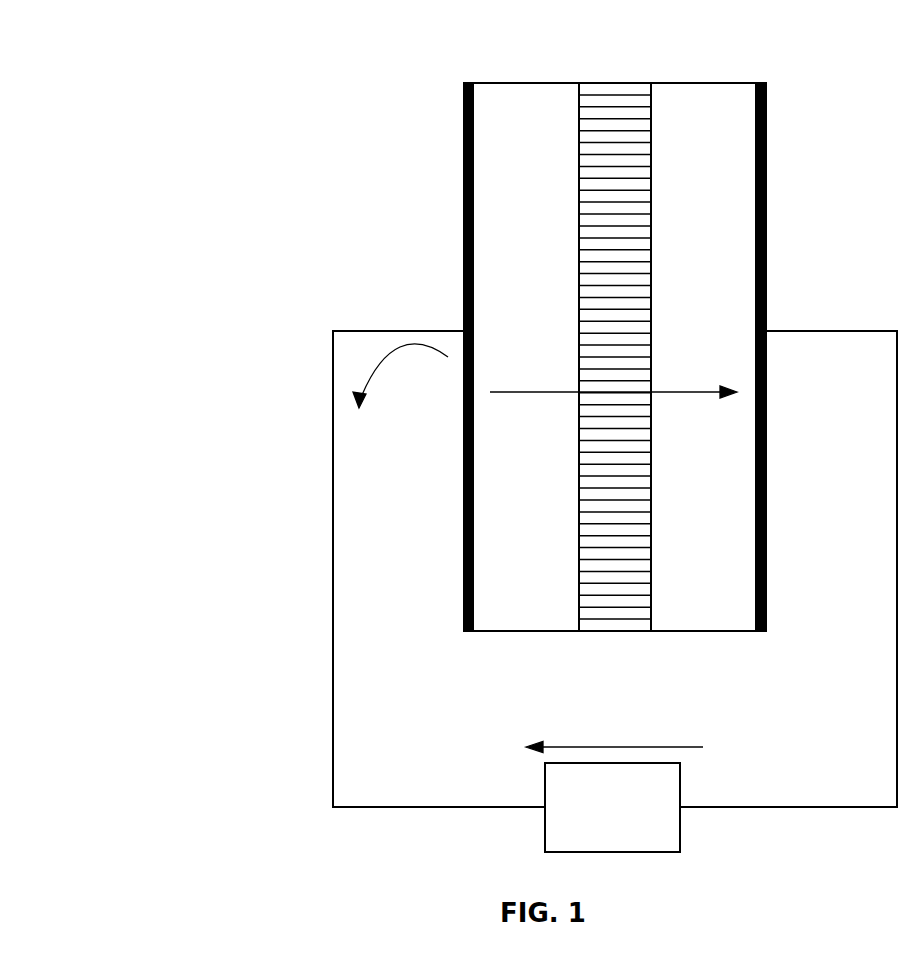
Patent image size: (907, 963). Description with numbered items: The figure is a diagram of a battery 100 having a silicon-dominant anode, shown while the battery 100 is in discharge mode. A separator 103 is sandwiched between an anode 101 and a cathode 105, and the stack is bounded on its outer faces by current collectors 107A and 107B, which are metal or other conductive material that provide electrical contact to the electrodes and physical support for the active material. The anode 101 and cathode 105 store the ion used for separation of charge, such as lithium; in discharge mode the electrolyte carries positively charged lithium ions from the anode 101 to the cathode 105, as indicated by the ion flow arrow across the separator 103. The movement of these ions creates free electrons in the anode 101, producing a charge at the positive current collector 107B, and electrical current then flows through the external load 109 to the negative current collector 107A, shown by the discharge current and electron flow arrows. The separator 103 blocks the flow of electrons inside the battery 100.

The battery 100 is at (150, 176).
The anode 101 is at (507, 293).
The separator 103 is at (617, 82).
The cathode 105 is at (685, 297).
The negative current collector 107A is at (462, 100).
The positive current collector 107B is at (767, 108).
The load 109 is at (594, 832).